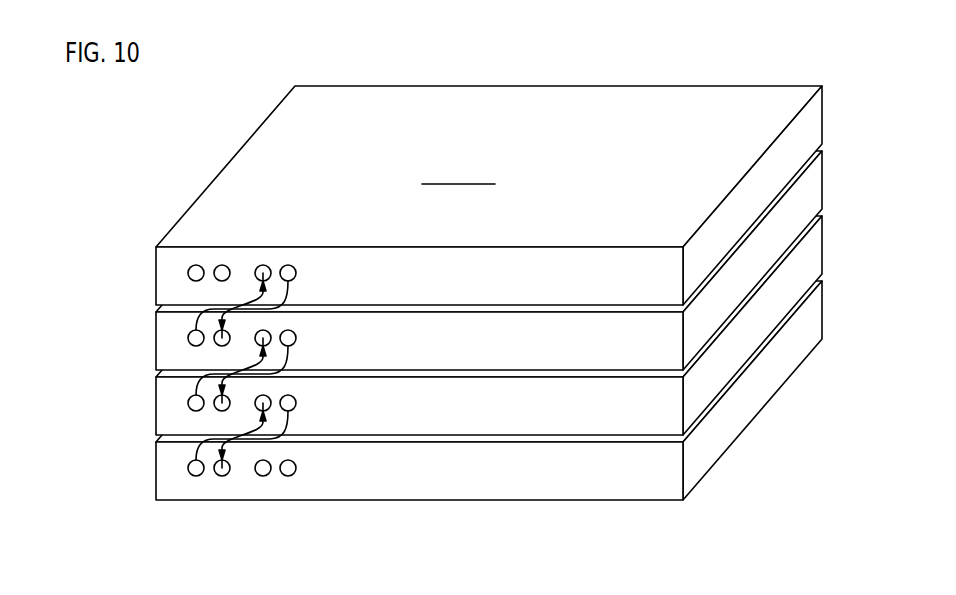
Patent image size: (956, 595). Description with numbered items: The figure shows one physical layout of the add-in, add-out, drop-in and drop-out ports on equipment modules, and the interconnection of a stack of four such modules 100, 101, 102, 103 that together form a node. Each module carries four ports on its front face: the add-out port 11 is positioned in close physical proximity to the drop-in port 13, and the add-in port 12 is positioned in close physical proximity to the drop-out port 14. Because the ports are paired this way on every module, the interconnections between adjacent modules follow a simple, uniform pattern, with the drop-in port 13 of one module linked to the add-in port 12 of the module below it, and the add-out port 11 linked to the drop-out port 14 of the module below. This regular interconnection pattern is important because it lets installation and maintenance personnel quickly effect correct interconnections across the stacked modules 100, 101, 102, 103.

The module 100 is at (152, 274).
The module 101 is at (152, 339).
The module 102 is at (152, 404).
The module 103 is at (152, 469).
The drop-out port 14 is at (196, 264).
The add-in port 12 is at (222, 264).
The drop-in port 13 is at (263, 264).
The add-out port 11 is at (288, 264).